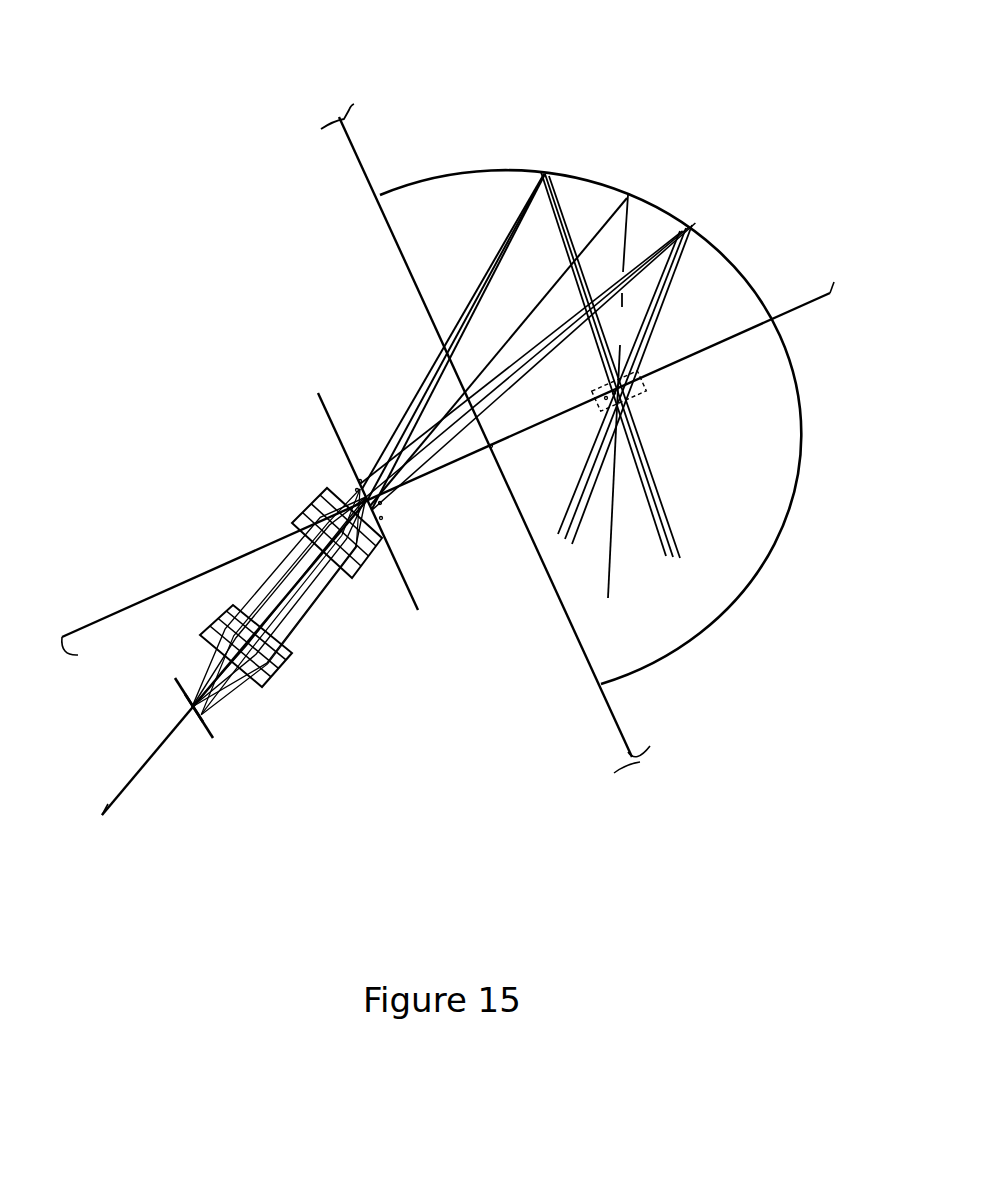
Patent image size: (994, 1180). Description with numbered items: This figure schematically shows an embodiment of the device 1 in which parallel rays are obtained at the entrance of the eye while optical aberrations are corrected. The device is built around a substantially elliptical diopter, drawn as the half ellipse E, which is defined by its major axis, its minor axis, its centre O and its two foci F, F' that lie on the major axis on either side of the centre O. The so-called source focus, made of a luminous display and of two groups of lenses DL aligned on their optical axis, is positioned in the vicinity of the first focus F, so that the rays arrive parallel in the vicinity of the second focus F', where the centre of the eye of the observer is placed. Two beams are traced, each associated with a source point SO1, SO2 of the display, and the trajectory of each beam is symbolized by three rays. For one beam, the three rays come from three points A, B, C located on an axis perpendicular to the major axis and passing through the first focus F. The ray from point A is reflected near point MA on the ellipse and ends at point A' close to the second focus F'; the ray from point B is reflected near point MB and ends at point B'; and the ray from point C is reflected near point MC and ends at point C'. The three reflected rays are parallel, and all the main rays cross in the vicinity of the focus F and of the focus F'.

The device 1 is at (445, 108).
The substantially elliptical diopter E is at (723, 250).
The reflection point M_A MA is at (553, 173).
The reflection point M_B MB is at (547, 172).
The reflection point M_C MC is at (537, 172).
The point A' is at (635, 374).
The point B' is at (622, 396).
The point C' is at (578, 381).
The second focus F' is at (584, 419).
The point A is at (328, 467).
The point B is at (362, 443).
The point C is at (406, 540).
The first focus F is at (402, 521).
The centre O is at (491, 448).
The groups of lenses DL is at (307, 508).
The source point SO1 is at (198, 727).
The source point SO2 is at (177, 684).